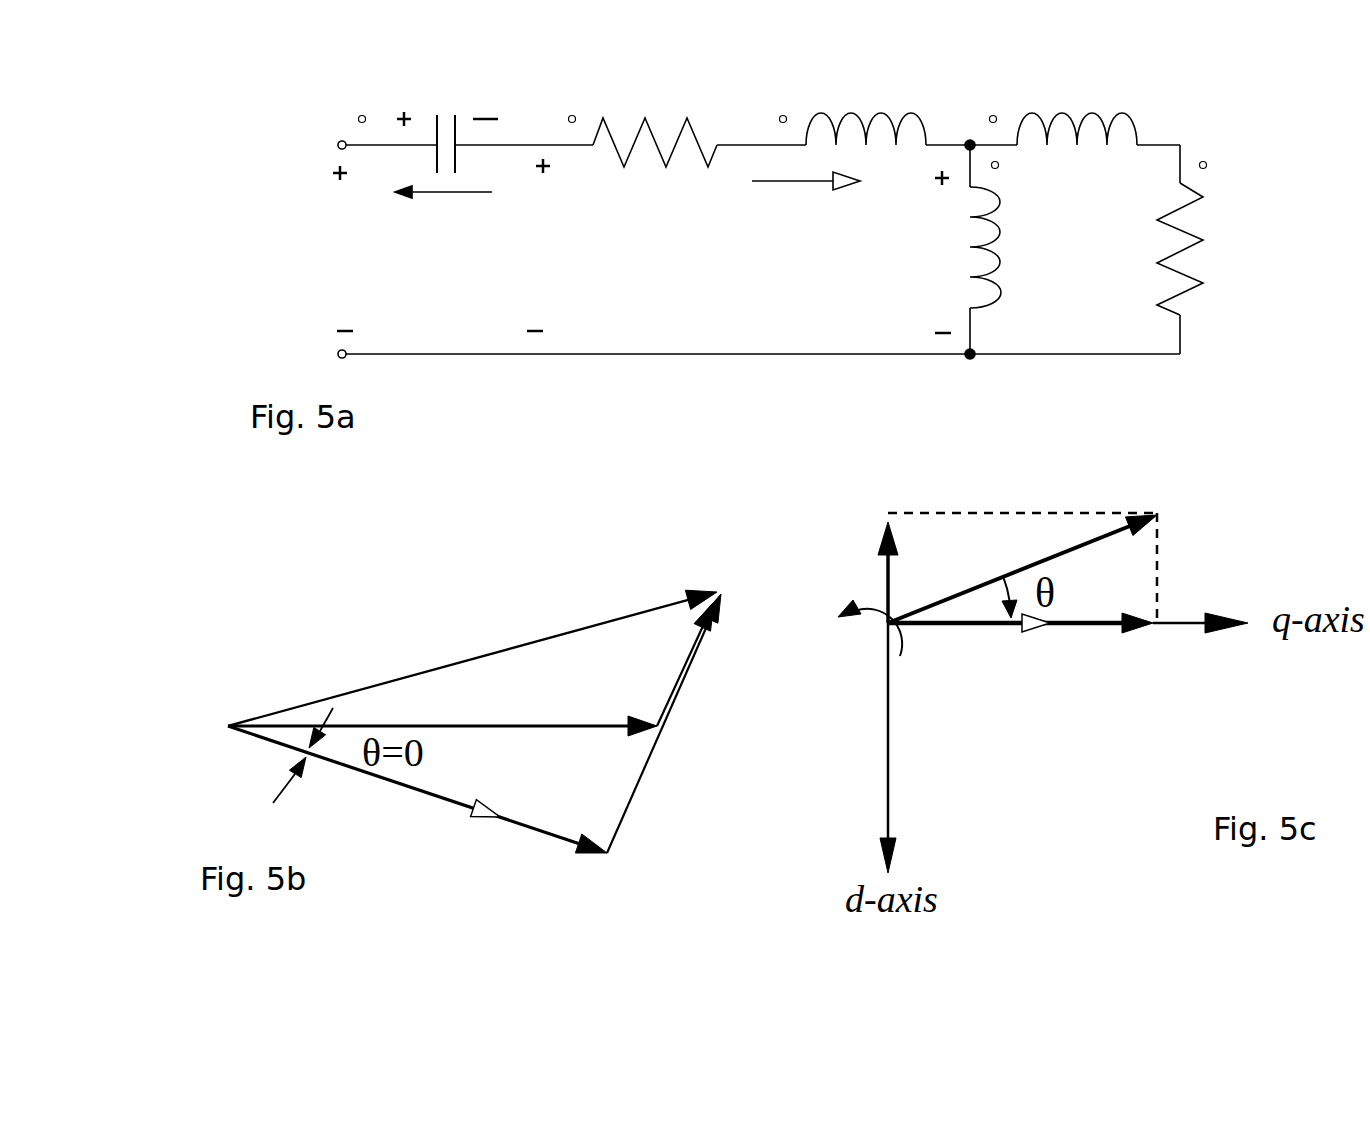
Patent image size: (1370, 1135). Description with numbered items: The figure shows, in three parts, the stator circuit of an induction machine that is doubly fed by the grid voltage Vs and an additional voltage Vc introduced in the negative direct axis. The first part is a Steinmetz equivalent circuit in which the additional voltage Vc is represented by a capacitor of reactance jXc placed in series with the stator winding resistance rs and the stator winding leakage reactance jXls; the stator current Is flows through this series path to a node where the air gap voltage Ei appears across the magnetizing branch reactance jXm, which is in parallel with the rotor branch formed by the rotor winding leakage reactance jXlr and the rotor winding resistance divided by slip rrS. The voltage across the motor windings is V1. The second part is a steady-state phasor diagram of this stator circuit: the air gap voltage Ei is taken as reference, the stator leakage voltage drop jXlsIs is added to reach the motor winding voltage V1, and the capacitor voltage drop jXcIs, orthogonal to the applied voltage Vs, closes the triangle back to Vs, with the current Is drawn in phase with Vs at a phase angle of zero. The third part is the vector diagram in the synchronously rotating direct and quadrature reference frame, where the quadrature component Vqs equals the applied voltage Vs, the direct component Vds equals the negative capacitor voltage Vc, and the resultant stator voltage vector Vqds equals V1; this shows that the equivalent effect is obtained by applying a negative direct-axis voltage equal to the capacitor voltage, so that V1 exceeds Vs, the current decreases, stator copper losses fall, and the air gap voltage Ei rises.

In FIG. 5A, the capacitor reactance jXc is at (447, 114).
In FIG. 5A, the stator winding resistance rs is at (655, 107).
In FIG. 5A, the stator winding leakage reactance jXls is at (866, 99).
In FIG. 5A, the rotor winding leakage reactance jXlr is at (1077, 99).
In FIG. 5A, the magnetizing branch reactance jXm is at (1028, 247).
In FIG. 5A, the rotor winding resistance divided by slip rrS is at (1218, 249).
In FIG. 5A, the applied voltage Vs is at (353, 249).
In FIG. 5B, the applied voltage Vs is at (417, 821).
In FIG. 5A, the additional voltage Vc is at (443, 226).
In FIG. 5A, the motor winding voltage V1 is at (545, 245).
In FIG. 5B, the motor winding voltage V1 is at (472, 616).
In FIG. 5A, the stator current Is is at (806, 212).
In FIG. 5B, the stator current Is is at (493, 849).
In FIG. 5C, the stator current Is is at (1029, 655).
In FIG. 5A, the air gap voltage Ei is at (933, 252).
In FIG. 5B, the air gap voltage Ei is at (442, 751).
In FIG. 5B, the stator leakage reactance voltage drop jXlsIs is at (637, 664).
In FIG. 5B, the capacitor voltage drop jXcIs is at (689, 723).
In FIG. 5C, the d-axis stator voltage Vds is at (868, 539).
In FIG. 5C, the q-axis stator voltage Vqs is at (1059, 657).
In FIG. 5C, the stator voltage vector Vqds is at (1129, 555).